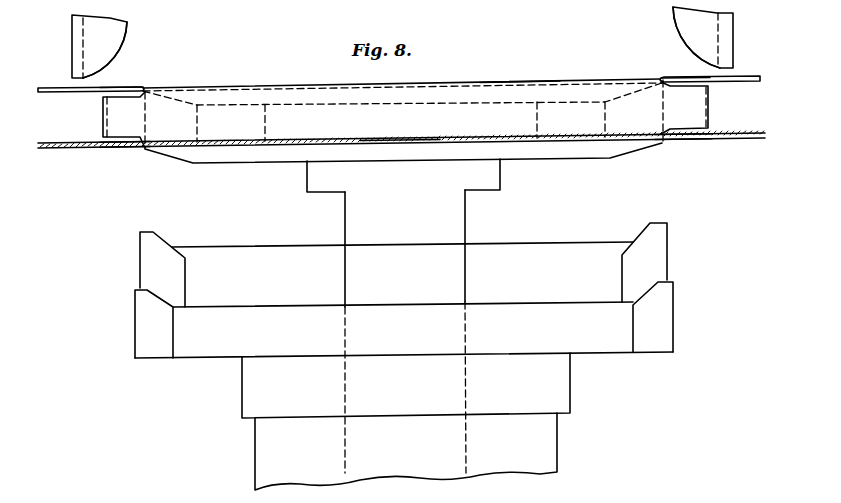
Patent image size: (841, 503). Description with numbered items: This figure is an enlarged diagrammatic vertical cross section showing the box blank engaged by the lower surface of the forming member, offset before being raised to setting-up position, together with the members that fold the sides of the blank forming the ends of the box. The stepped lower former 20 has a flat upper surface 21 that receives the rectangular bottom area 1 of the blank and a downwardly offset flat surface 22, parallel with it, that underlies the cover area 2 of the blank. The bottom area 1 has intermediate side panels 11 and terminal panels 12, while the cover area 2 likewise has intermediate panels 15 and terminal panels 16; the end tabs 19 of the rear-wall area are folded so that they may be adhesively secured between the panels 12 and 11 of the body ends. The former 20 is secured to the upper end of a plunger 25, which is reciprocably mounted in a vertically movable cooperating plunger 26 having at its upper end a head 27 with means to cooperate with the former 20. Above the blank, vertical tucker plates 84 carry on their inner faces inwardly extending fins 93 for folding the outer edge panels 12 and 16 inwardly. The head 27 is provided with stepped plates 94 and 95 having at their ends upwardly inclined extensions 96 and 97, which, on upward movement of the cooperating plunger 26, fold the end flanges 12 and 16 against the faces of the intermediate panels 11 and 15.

The bottom area 1 is at (581, 78).
The cover area 2 is at (547, 136).
The intermediate side panels 11 is at (115, 87).
The terminal panels 12 is at (62, 92).
The intermediate panels 15 is at (124, 150).
The terminal panels 16 is at (69, 150).
The end tabs 19 is at (103, 116).
The stepped lower former 20 is at (277, 160).
The flat upper surface 21 is at (518, 78).
The downwardly offset flat surface 22 is at (402, 146).
The plunger 25 is at (467, 213).
The cooperating plunger 26 is at (547, 450).
The head 27 is at (238, 341).
The tucker plates 84 is at (74, 52).
The fins 93 is at (118, 45).
The stepped plate 94 is at (612, 337).
The stepped plate 95 is at (592, 248).
The upwardly inclined extensions 96 is at (178, 267).
The upwardly inclined extensions 97 is at (165, 327).